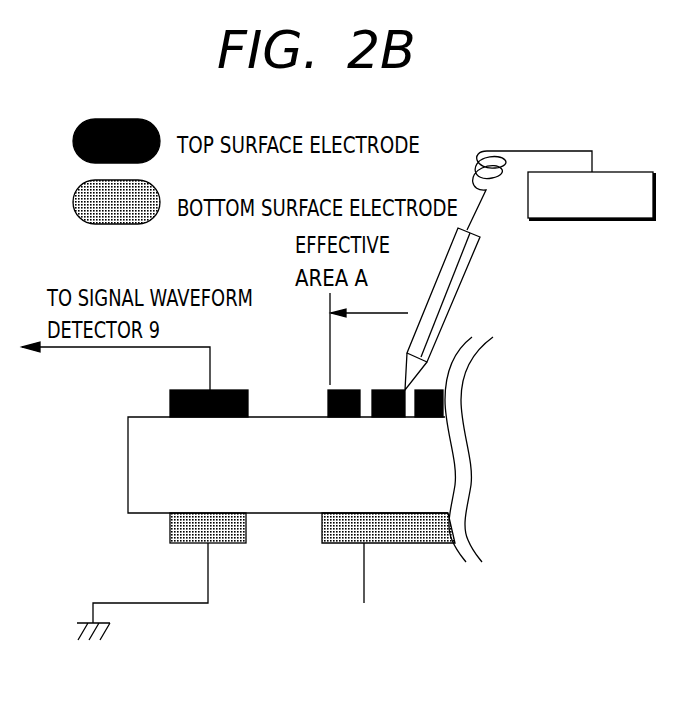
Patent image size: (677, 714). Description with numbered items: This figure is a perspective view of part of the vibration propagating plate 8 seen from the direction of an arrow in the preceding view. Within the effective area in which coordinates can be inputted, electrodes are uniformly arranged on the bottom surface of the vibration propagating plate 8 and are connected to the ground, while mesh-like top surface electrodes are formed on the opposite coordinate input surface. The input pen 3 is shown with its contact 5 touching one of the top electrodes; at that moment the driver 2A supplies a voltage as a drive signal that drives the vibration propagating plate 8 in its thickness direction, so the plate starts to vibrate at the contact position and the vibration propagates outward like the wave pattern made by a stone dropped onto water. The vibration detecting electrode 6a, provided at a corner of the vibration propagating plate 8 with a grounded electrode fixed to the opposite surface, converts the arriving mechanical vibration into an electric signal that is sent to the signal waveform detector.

The driver 2A is at (626, 171).
The input pen 3 is at (463, 280).
The contact 5 is at (405, 372).
The electrode for detection of vibration 6a is at (170, 405).
The vibration propagating plate 8 is at (128, 497).